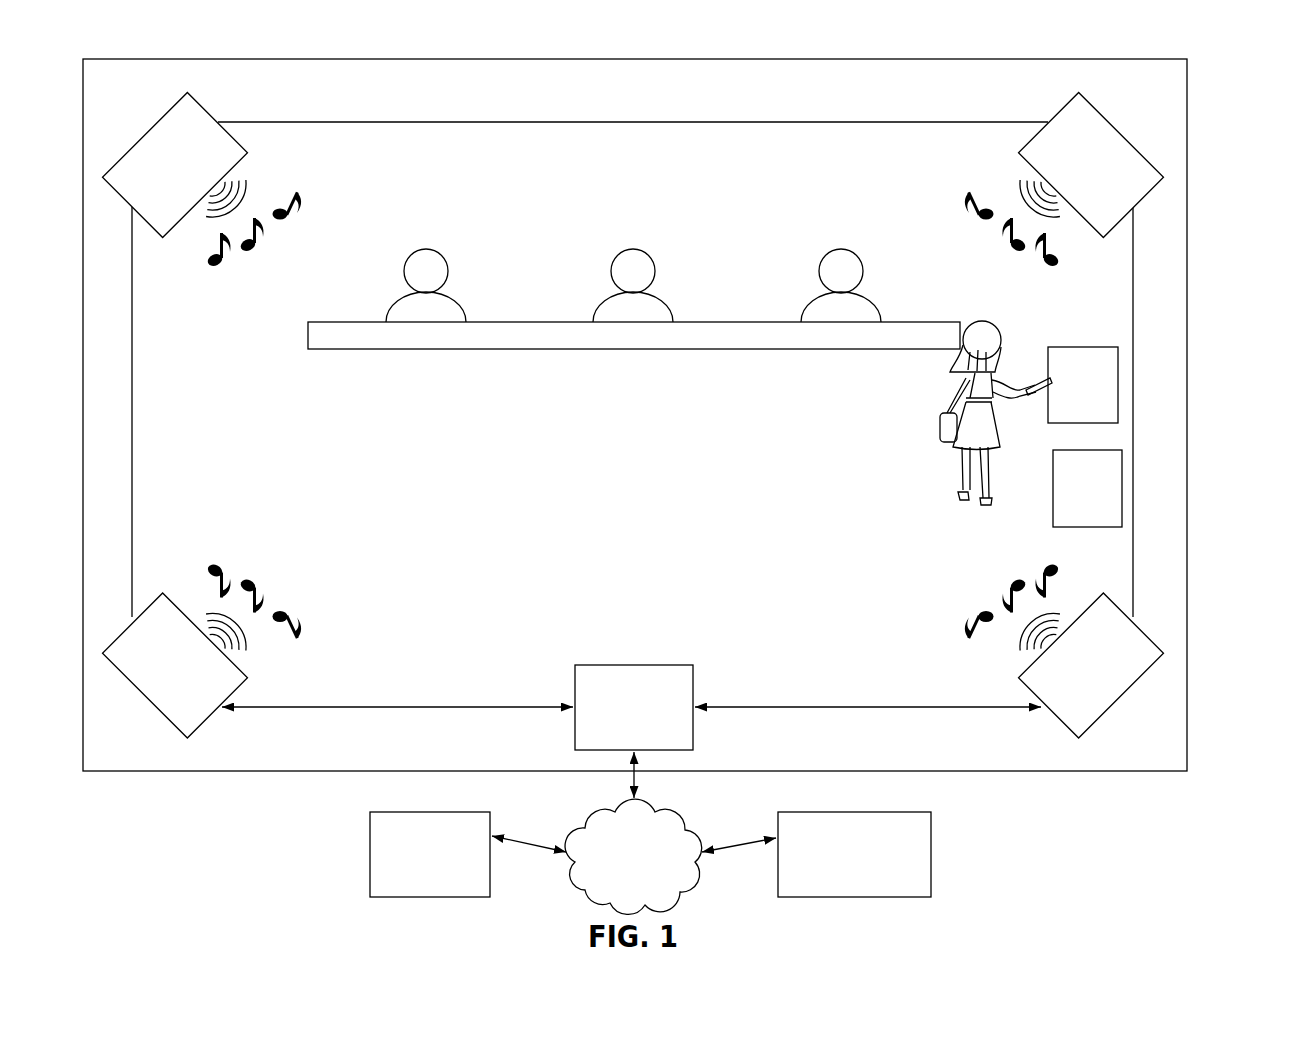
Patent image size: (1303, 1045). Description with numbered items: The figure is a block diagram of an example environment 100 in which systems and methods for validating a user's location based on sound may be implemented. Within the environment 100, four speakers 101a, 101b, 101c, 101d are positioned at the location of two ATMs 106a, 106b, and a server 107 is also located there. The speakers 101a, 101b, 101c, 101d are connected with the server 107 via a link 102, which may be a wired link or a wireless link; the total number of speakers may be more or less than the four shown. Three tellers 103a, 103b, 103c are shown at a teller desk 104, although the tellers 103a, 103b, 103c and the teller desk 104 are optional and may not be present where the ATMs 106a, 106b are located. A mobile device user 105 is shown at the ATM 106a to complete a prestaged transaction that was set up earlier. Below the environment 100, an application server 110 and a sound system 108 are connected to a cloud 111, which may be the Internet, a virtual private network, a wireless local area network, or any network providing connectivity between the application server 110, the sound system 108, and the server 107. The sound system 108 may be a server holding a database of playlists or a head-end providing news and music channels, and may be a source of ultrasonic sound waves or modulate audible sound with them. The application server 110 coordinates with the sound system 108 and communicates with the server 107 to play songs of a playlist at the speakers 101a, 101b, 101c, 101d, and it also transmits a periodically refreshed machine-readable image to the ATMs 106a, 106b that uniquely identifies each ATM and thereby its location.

The environment 100 is at (1253, 49).
The speaker 101a is at (205, 112).
The speaker 101b is at (1057, 112).
The speaker 101c is at (205, 718).
The speaker 101d is at (1057, 718).
The link 102 is at (473, 122).
The teller 103a is at (426, 249).
The teller 103b is at (633, 249).
The teller 103c is at (841, 249).
The teller desk 104 is at (722, 349).
The mobile device user 105 is at (988, 322).
The ATM 106a is at (1098, 347).
The ATM 106b is at (1098, 527).
The server 107 is at (658, 665).
The sound system 108 is at (370, 866).
The application server 110 is at (931, 858).
The cloud 111 is at (690, 812).